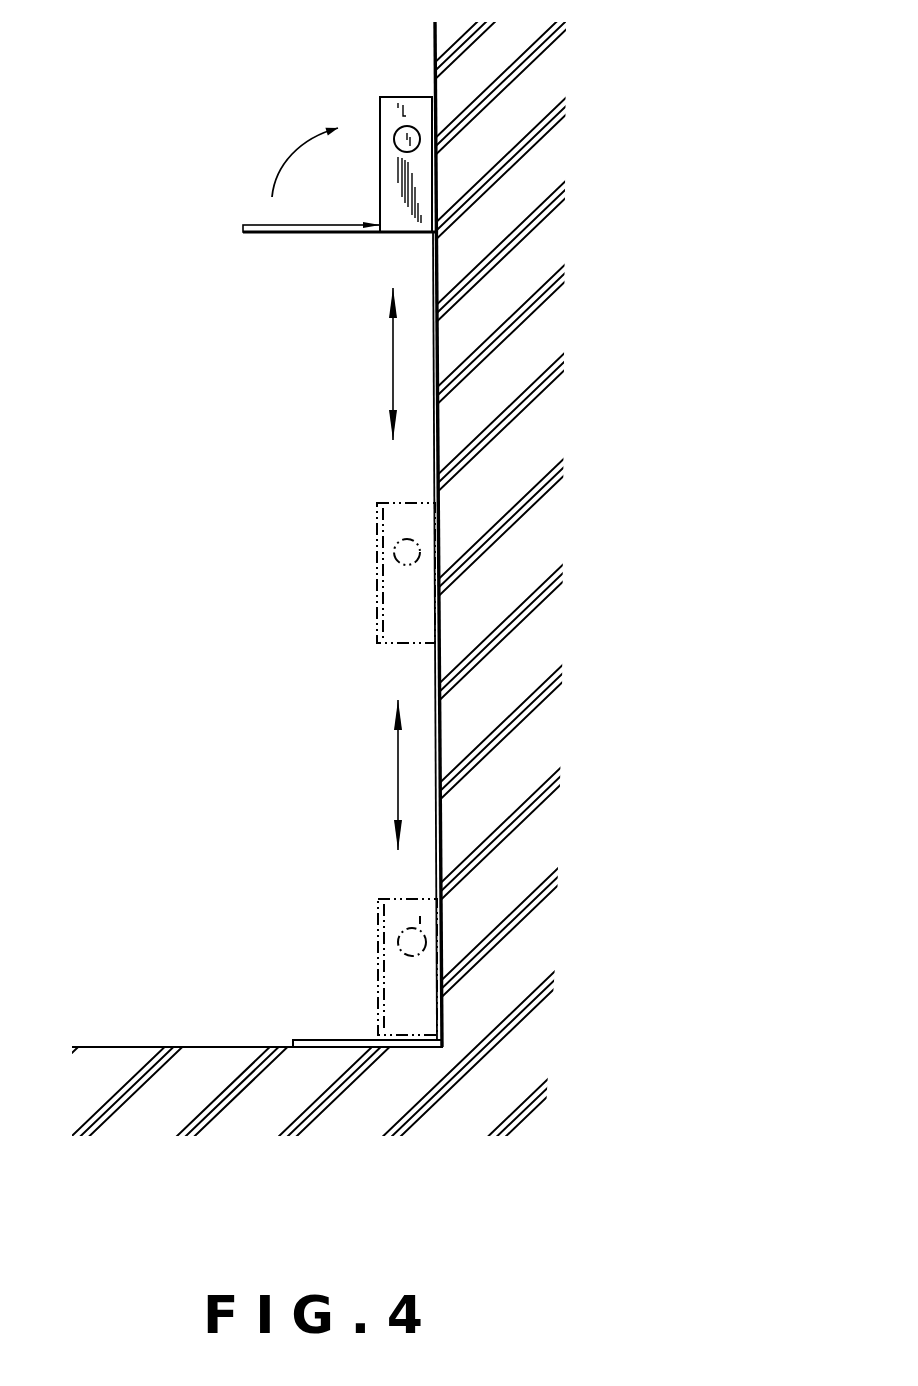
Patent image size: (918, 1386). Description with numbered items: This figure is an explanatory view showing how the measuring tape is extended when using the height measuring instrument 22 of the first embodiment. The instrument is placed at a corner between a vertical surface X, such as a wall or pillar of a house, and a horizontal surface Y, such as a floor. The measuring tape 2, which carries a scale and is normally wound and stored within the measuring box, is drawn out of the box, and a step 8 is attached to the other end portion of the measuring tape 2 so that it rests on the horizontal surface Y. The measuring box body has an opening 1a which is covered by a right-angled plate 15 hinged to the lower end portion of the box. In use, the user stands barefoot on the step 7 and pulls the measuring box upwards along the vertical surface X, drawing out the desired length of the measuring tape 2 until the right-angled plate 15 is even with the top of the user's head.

The vertical surface X is at (435, 68).
The horizontal surface Y is at (118, 1046).
The measuring tape 2 is at (432, 474).
The height measuring instrument 22 is at (378, 113).
The right-angled plate 15 is at (275, 233).
The opening 1a is at (380, 188).
The step 7 is at (398, 945).
The step 8 is at (310, 1037).